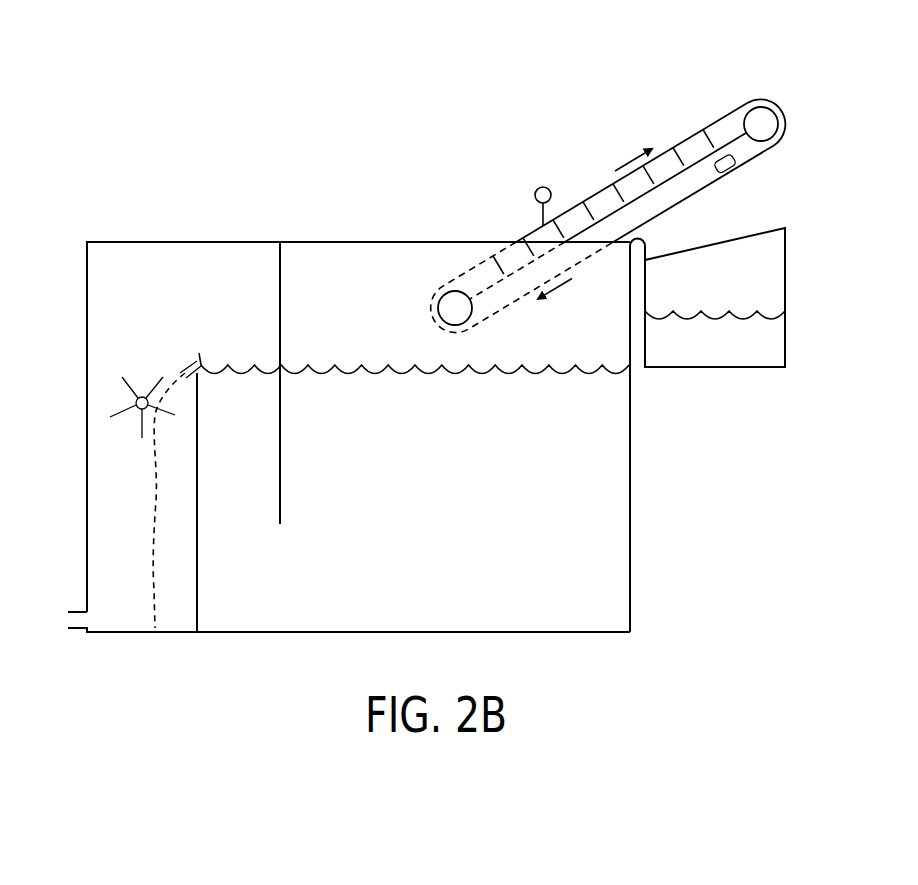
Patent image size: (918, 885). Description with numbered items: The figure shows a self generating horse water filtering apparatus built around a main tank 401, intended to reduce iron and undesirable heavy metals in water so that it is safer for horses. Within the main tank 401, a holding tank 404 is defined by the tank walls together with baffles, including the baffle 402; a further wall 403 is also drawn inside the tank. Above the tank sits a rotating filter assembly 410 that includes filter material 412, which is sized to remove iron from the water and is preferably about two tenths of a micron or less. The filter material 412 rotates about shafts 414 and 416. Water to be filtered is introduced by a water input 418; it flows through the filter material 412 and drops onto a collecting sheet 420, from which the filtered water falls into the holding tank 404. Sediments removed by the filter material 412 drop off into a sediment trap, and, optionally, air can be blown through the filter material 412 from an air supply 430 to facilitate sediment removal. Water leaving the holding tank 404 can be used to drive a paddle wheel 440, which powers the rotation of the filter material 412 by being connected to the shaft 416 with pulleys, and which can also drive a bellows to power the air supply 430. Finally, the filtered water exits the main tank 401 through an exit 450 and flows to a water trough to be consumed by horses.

The main tank 401 is at (632, 522).
The baffle 402 is at (282, 416).
The baffle wall 403 is at (199, 502).
The holding tank 404 is at (421, 513).
The rotating filter assembly 410 is at (713, 62).
The filter material 412 is at (733, 112).
The shaft 414 is at (450, 312).
The shaft 416 is at (768, 127).
The water input 418 is at (541, 187).
The collecting sheet 420 is at (705, 128).
The air supply 430 is at (733, 162).
The paddle wheel 440 is at (126, 384).
The exit 450 is at (74, 611).